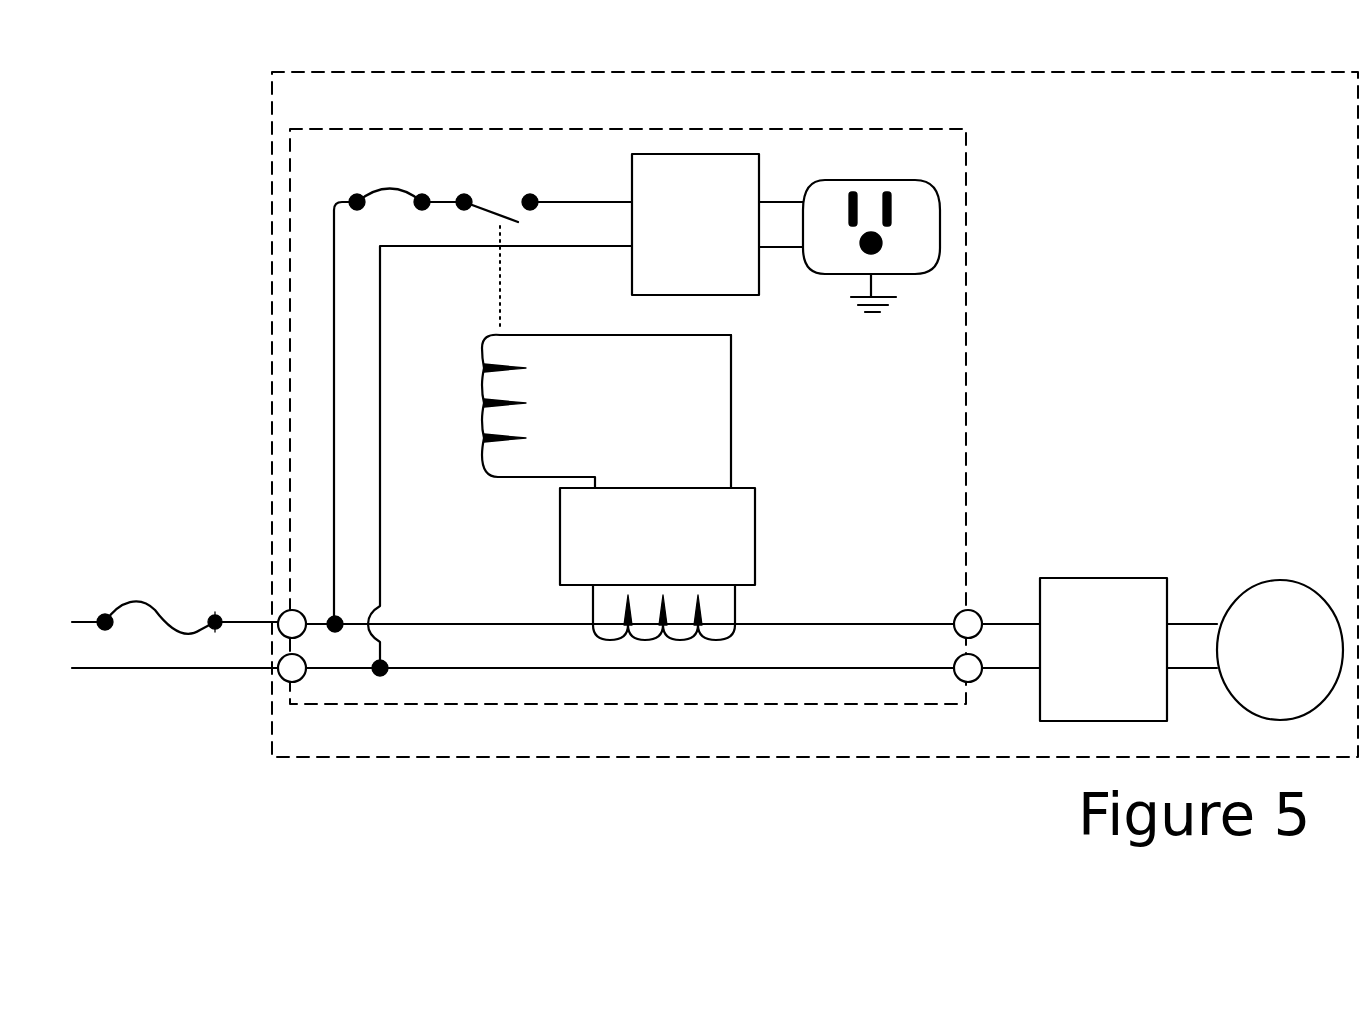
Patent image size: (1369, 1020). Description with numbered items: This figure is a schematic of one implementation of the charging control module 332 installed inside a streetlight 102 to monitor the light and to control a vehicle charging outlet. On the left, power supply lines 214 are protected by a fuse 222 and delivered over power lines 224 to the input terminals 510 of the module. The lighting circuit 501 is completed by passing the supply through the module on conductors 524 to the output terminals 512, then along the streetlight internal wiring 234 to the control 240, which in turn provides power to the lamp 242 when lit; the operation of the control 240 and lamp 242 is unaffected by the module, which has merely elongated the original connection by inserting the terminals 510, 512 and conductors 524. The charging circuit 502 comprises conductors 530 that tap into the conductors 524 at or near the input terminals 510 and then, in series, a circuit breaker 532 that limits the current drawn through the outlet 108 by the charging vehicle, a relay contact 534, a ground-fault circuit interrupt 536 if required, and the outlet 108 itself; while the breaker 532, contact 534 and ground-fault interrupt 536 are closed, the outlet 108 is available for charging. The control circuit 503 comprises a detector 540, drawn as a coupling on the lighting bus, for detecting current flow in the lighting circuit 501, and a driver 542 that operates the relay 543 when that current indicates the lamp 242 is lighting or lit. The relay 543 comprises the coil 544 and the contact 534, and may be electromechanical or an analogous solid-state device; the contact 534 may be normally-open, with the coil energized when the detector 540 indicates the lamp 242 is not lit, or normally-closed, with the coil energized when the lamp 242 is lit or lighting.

The streetlight 102 is at (380, 72).
The charging control module 332 is at (535, 129).
The conductors 530 is at (334, 214).
The circuit breaker 532 is at (400, 181).
The relay contact 534 is at (500, 215).
The ground-fault circuit interrupt 536 is at (632, 200).
The outlet 108 is at (850, 278).
The charging circuit 502 is at (872, 233).
The coil 544 is at (482, 457).
The control circuit 503 is at (638, 487).
The driver 542 is at (755, 527).
The lighting circuit 501 is at (1162, 572).
The relay 543 is at (495, 505).
The detector 540 is at (735, 615).
The conductors 524 is at (527, 597).
The fuse 222 is at (160, 602).
The power lines 224 is at (242, 620).
The power supply lines 214 is at (82, 626).
The input terminals 510 is at (304, 636).
The output terminals 512 is at (956, 637).
The streetlight internal wiring 234 is at (1000, 623).
The control 240 is at (1115, 578).
The lamp 242 is at (1250, 583).